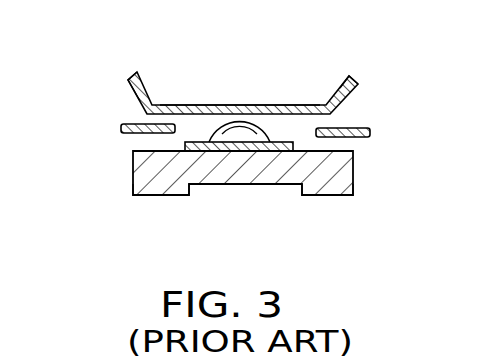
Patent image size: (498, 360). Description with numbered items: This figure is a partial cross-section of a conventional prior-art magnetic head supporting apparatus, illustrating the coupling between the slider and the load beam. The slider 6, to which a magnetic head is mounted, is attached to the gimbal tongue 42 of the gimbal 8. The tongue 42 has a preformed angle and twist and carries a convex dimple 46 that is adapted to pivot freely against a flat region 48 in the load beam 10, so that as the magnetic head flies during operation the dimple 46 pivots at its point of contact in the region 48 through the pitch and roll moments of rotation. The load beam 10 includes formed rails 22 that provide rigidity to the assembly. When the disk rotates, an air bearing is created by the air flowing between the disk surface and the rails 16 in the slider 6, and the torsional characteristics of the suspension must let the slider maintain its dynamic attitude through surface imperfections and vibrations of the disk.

The slider 6 is at (355, 170).
The gimbal 8 is at (108, 128).
The load beam 10 is at (308, 110).
The rails 16 is at (165, 195).
The formed rails 22 is at (126, 84).
The gimbal tongue 42 is at (278, 152).
The convex dimple 46 is at (240, 128).
The flat region 48 is at (233, 109).